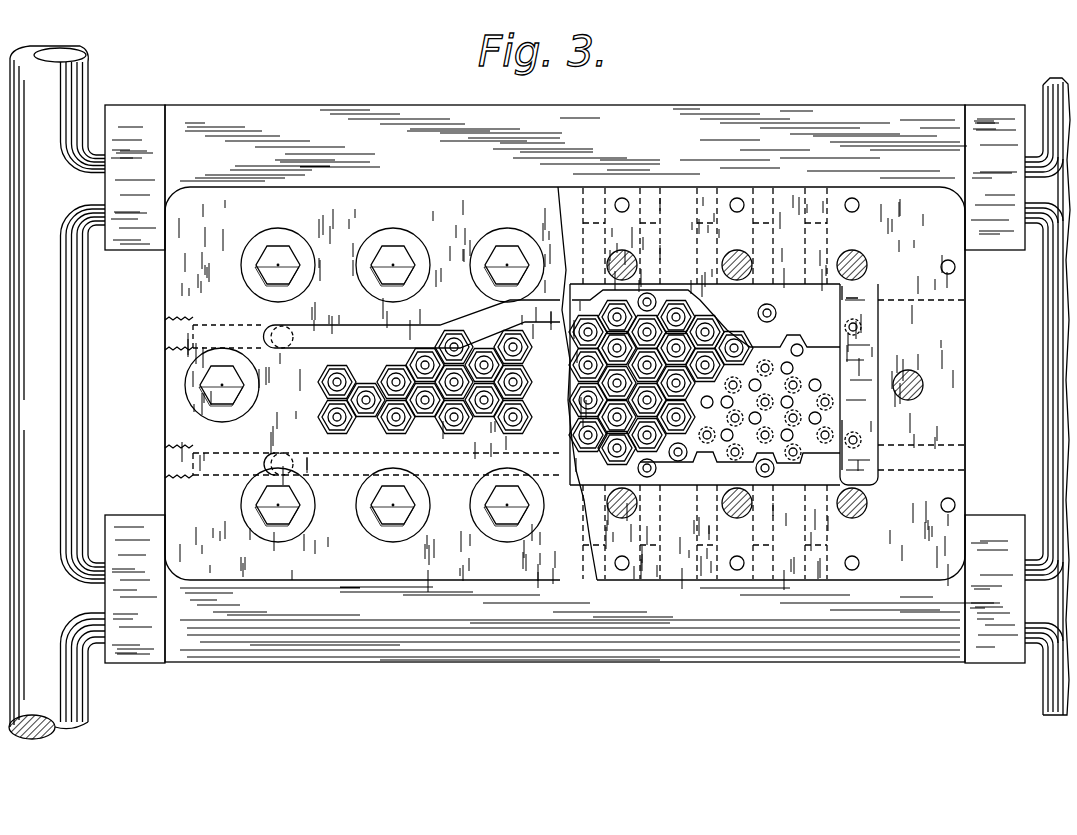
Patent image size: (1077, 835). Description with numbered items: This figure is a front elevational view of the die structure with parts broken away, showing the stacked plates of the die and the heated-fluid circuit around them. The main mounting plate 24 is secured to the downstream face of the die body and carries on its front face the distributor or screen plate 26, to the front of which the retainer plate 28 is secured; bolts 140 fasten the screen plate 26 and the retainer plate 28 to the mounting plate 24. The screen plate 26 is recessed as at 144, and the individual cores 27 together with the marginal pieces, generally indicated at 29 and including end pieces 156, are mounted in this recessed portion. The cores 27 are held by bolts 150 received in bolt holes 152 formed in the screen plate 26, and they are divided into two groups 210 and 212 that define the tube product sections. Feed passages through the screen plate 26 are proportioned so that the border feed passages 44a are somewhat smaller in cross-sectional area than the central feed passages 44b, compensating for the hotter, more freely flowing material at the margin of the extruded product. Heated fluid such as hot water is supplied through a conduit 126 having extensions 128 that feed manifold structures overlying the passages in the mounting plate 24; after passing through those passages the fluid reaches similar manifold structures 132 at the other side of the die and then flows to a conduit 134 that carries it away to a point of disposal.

The main mounting plate 24 is at (726, 117).
The distributor or screen plate 26 is at (772, 197).
The cores 27 is at (324, 432).
The retainer plate 28 is at (350, 198).
The marginal pieces 29 is at (866, 298).
The border feed passages 44a is at (821, 418).
The central feed passages 44b is at (766, 402).
The conduit 126 is at (1040, 415).
The extensions 128 is at (1040, 115).
The manifold structures 132 is at (130, 112).
The conduit 134 is at (80, 694).
The bolts 140 is at (500, 258).
The recessed portion 144 is at (874, 432).
The bolts 150 is at (530, 388).
The bolt holes 152 is at (797, 455).
The end pieces 156 is at (862, 362).
The group of cores 210 is at (748, 327).
The group of cores 212 is at (313, 408).